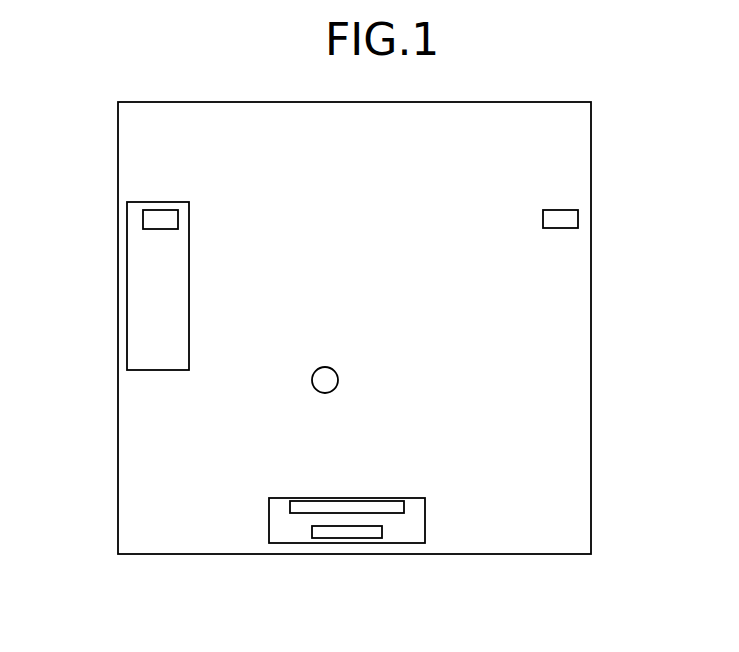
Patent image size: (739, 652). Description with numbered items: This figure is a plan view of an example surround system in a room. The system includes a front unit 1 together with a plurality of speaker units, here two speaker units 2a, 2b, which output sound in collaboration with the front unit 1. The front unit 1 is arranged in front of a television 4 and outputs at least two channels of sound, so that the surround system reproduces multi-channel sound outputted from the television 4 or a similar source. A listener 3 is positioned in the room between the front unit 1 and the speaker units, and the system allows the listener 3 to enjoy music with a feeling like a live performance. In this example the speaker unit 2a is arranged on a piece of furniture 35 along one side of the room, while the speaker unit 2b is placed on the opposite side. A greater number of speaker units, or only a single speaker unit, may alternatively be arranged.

The front unit 1 is at (381, 501).
The speaker unit 2a is at (143, 219).
The speaker unit 2b is at (578, 218).
The listener 3 is at (326, 367).
The television 4 is at (334, 538).
The piece of furniture 35 is at (137, 340).